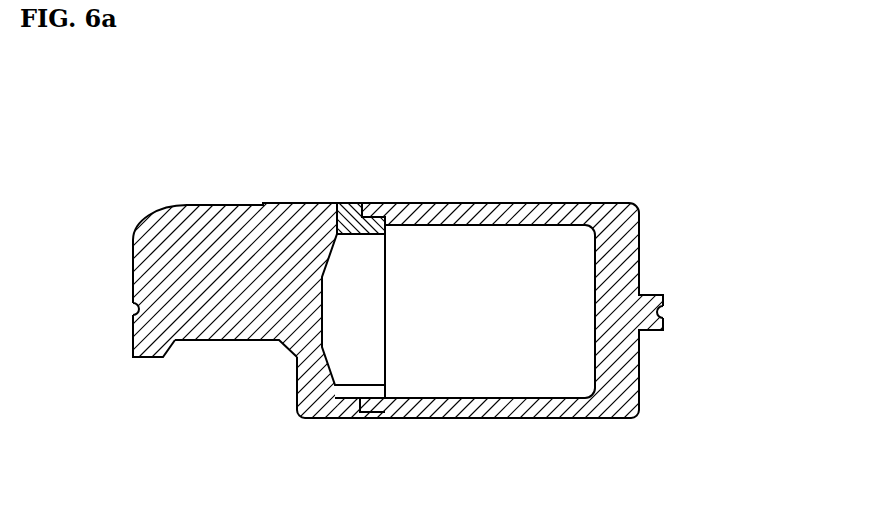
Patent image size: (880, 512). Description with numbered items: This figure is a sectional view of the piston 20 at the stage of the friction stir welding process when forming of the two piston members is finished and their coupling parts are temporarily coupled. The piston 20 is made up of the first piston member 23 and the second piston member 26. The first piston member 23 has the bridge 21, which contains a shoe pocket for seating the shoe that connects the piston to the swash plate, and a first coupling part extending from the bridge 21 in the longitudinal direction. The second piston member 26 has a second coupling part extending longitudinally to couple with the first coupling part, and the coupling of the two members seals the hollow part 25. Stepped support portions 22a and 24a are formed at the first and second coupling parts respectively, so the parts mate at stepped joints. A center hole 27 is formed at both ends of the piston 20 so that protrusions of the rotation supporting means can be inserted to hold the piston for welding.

The piston 20 is at (445, 182).
The bridge 21 is at (229, 243).
The stepped support portion 22a is at (362, 385).
The first piston member 23 is at (266, 358).
The stepped support portion 24a is at (333, 212).
The hollow part 25 is at (507, 262).
The second piston member 26 is at (648, 426).
The center hole 27 is at (135, 308).